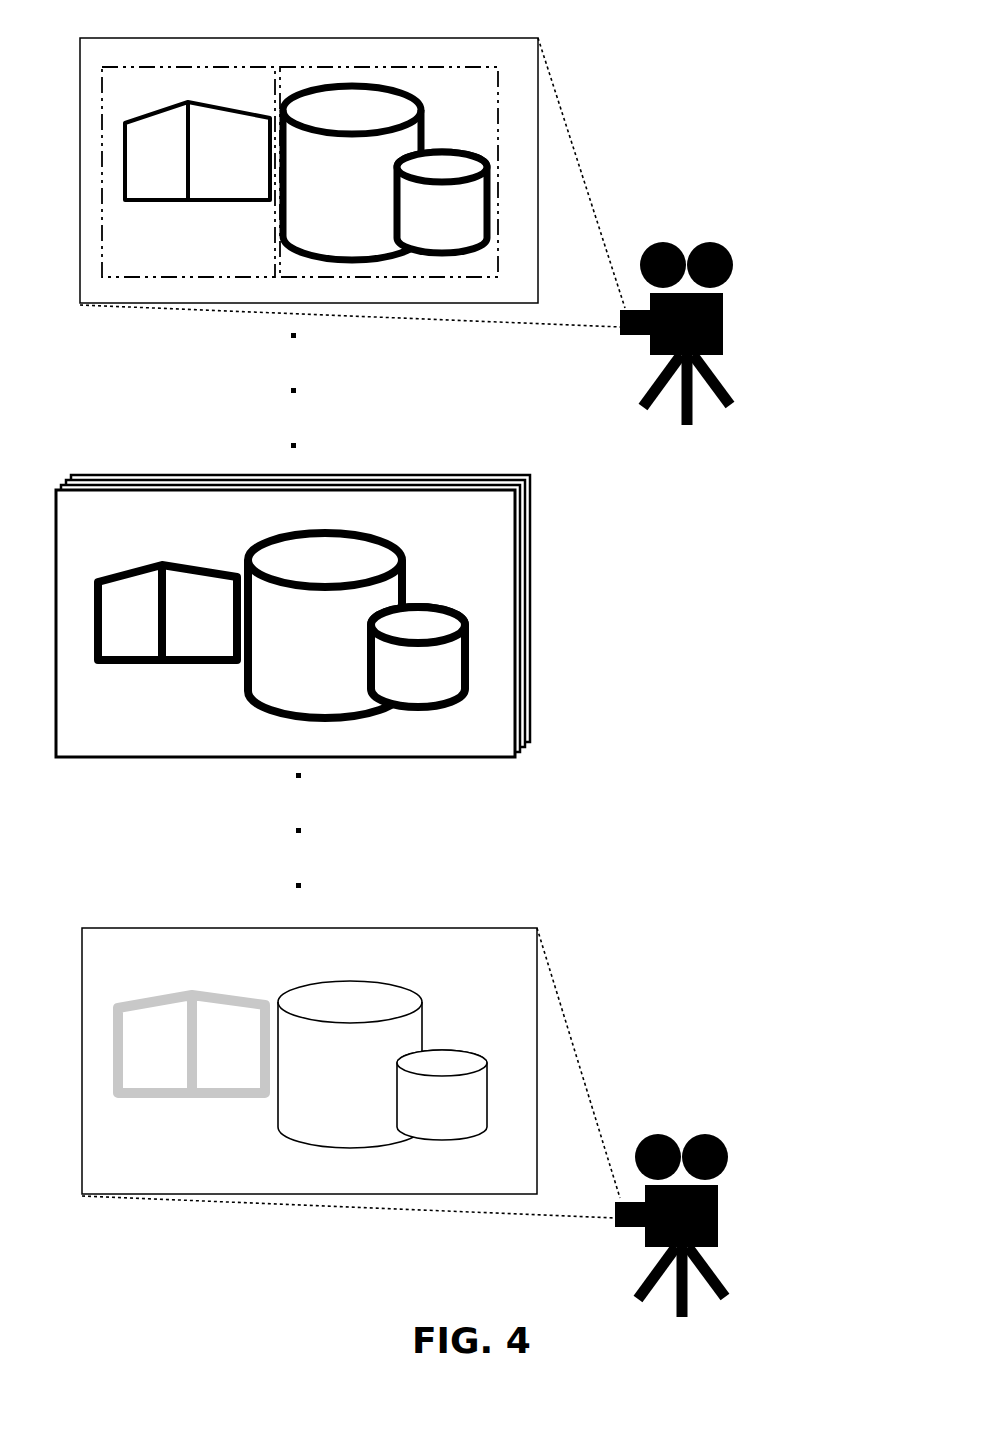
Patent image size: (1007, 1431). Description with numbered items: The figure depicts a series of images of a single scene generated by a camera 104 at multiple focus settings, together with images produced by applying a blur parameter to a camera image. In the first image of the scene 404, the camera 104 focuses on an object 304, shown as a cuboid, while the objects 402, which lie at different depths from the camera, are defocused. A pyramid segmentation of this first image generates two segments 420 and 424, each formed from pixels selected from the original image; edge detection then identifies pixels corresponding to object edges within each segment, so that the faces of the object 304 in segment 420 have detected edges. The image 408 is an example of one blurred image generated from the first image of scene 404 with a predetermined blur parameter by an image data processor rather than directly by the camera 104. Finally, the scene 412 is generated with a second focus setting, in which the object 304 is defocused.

The camera 104 is at (758, 365).
The object 304 is at (233, 187).
The objects 402 is at (431, 146).
The scene 404 is at (150, 318).
The blurred image 408 is at (120, 786).
The scene 412 is at (147, 1211).
The segment 420 is at (203, 57).
The segment 424 is at (408, 57).